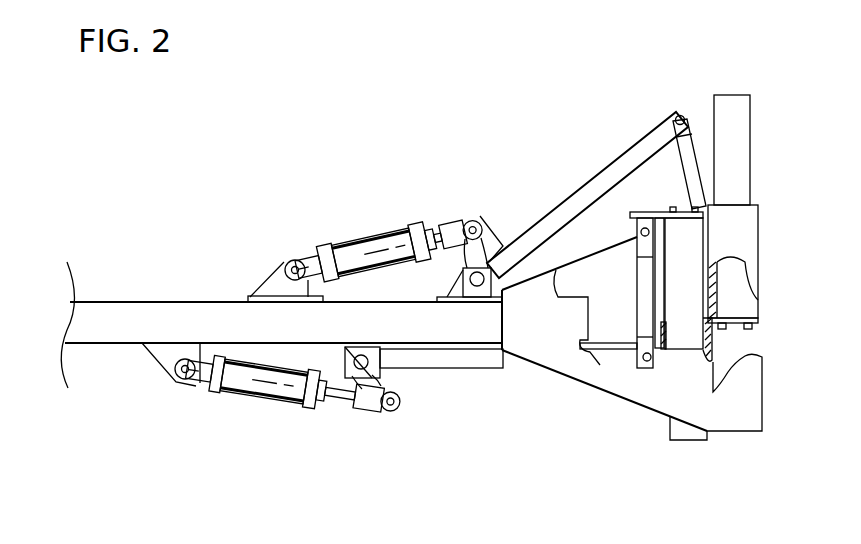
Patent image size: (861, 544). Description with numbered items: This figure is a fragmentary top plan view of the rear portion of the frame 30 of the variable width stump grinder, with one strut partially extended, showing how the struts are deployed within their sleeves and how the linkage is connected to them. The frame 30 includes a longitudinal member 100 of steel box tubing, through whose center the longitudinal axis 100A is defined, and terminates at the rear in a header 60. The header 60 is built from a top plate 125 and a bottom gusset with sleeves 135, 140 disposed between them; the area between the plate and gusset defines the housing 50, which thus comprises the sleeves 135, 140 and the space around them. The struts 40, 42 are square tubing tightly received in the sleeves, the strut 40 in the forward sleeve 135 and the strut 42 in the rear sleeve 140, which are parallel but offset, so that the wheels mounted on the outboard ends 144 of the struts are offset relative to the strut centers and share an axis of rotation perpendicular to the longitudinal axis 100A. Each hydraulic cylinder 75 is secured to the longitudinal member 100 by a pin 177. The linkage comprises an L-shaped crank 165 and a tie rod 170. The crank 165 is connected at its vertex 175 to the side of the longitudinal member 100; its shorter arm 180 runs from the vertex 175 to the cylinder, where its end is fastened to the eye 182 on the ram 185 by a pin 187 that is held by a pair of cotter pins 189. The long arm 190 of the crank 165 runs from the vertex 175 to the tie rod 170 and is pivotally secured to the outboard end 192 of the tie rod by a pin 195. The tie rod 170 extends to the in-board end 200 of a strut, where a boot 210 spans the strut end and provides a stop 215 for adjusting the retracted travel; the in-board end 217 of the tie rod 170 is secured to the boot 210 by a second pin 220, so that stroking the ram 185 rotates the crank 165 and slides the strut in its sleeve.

The frame 30 is at (250, 125).
The retractable strut 40 is at (662, 212).
The retractable strut 42 is at (758, 157).
The housing 50 is at (580, 253).
The header 60 is at (556, 386).
The hydraulic cylinder 75 is at (355, 236).
The longitudinal member 100 is at (108, 322).
The longitudinal axis 100A is at (18, 330).
The top plate 125 is at (602, 360).
The forward sleeve 135 is at (657, 350).
The rear sleeve 140 is at (758, 310).
The outboard end 144 is at (740, 95).
The L-shaped crank 165 is at (498, 228).
The tie rod 170 is at (704, 148).
The vertex 175 is at (490, 286).
The pin 177 is at (296, 262).
The shorter arm 180 is at (465, 248).
The eye 182 is at (436, 241).
The ram 185 is at (418, 248).
The pin 187 is at (473, 221).
The cotter pins 189 is at (452, 226).
The long arm 190 is at (560, 218).
The outboard end 192 is at (693, 130).
The pin 195 is at (680, 115).
The in-board end 200 is at (687, 208).
The boot 210 is at (643, 212).
The stop 215 is at (700, 198).
The in-board end 217 is at (672, 233).
The second pin 220 is at (640, 223).